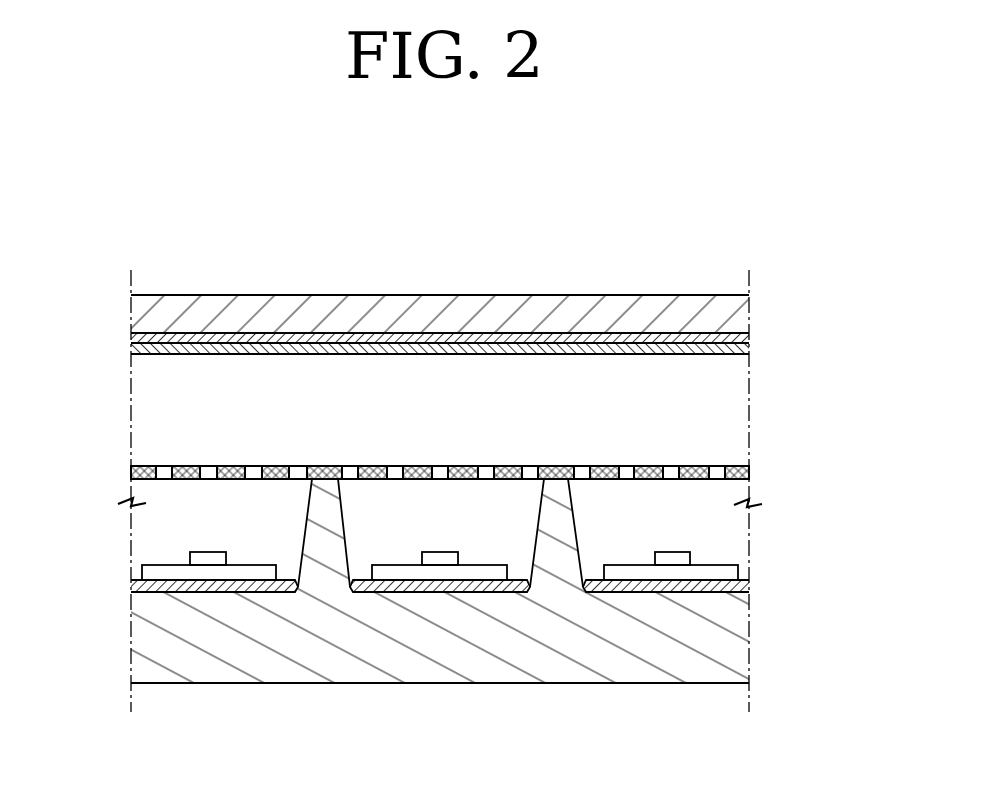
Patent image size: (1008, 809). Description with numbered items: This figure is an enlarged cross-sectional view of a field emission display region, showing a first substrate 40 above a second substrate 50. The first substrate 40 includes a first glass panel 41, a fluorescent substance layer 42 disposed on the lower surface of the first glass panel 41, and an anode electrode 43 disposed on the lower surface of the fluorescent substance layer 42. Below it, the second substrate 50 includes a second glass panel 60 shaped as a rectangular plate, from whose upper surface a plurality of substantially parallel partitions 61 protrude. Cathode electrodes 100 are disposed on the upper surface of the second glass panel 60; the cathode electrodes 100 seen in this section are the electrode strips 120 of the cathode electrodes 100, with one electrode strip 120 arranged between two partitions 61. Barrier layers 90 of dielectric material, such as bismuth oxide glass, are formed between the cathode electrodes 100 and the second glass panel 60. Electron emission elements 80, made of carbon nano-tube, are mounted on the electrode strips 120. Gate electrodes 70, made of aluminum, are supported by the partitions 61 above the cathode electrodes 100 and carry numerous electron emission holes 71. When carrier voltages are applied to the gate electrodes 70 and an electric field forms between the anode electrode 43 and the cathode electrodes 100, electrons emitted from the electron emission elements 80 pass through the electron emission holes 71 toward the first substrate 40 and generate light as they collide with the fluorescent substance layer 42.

The first substrate 40 is at (430, 340).
The first glass panel 41 is at (742, 307).
The fluorescent substance layer 42 is at (742, 339).
The anode electrode 43 is at (742, 346).
The second substrate 50 is at (465, 581).
The second glass panel 60 is at (733, 668).
The partitions 61 is at (327, 563).
The gate electrodes 70 is at (742, 470).
The electron emission holes 71 is at (673, 473).
The electron emission elements 80 is at (670, 555).
The barrier layer 90 is at (745, 587).
The cathode electrodes 100 is at (508, 566).
The electrode strips 120 is at (738, 572).